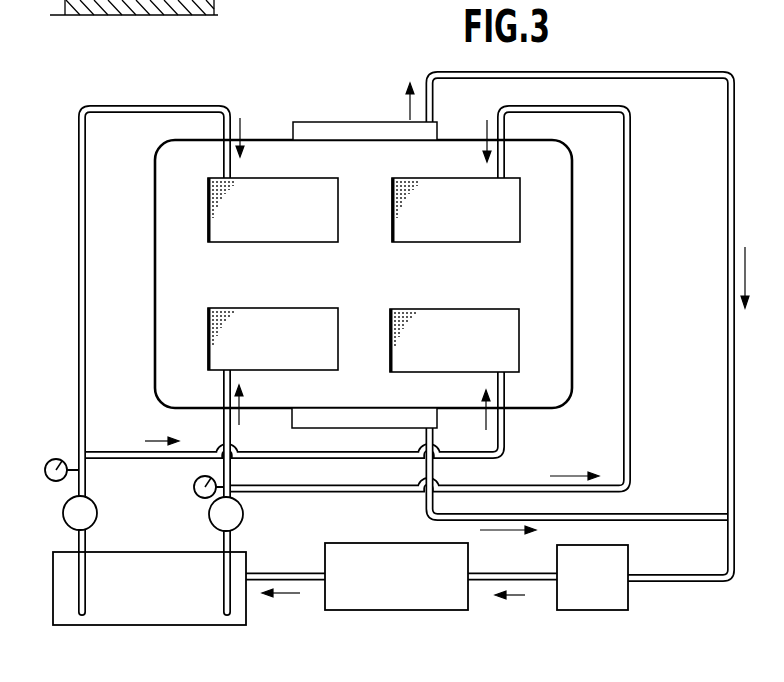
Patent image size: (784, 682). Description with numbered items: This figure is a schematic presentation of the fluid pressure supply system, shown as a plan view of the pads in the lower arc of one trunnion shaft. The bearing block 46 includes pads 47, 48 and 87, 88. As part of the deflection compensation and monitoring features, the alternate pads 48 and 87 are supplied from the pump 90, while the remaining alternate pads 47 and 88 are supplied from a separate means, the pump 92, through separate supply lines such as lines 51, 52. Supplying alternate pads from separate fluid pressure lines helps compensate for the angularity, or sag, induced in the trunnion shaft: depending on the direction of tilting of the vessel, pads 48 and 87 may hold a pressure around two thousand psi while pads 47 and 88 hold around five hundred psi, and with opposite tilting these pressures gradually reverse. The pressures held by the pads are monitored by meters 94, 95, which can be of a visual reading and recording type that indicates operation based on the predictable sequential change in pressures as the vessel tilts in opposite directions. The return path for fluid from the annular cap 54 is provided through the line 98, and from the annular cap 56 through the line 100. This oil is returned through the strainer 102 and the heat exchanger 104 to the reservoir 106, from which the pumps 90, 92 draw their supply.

The bearing block 46 is at (556, 211).
The pad 47 is at (283, 220).
The pad 48 is at (283, 350).
The pad 87 is at (466, 220).
The pad 88 is at (466, 351).
The coolant supply conduit 51 is at (265, 148).
The coolant supply conduit 52 is at (280, 398).
The annular cap 54 is at (340, 128).
The annular cap 56 is at (346, 425).
The pump 90 is at (243, 517).
The pump 92 is at (63, 508).
The meter 94 is at (47, 459).
The meter 95 is at (194, 493).
The line 98 is at (728, 200).
The line 100 is at (689, 513).
The strainer 102 is at (608, 588).
The heat exchanger 104 is at (365, 543).
The reservoir 106 is at (168, 552).